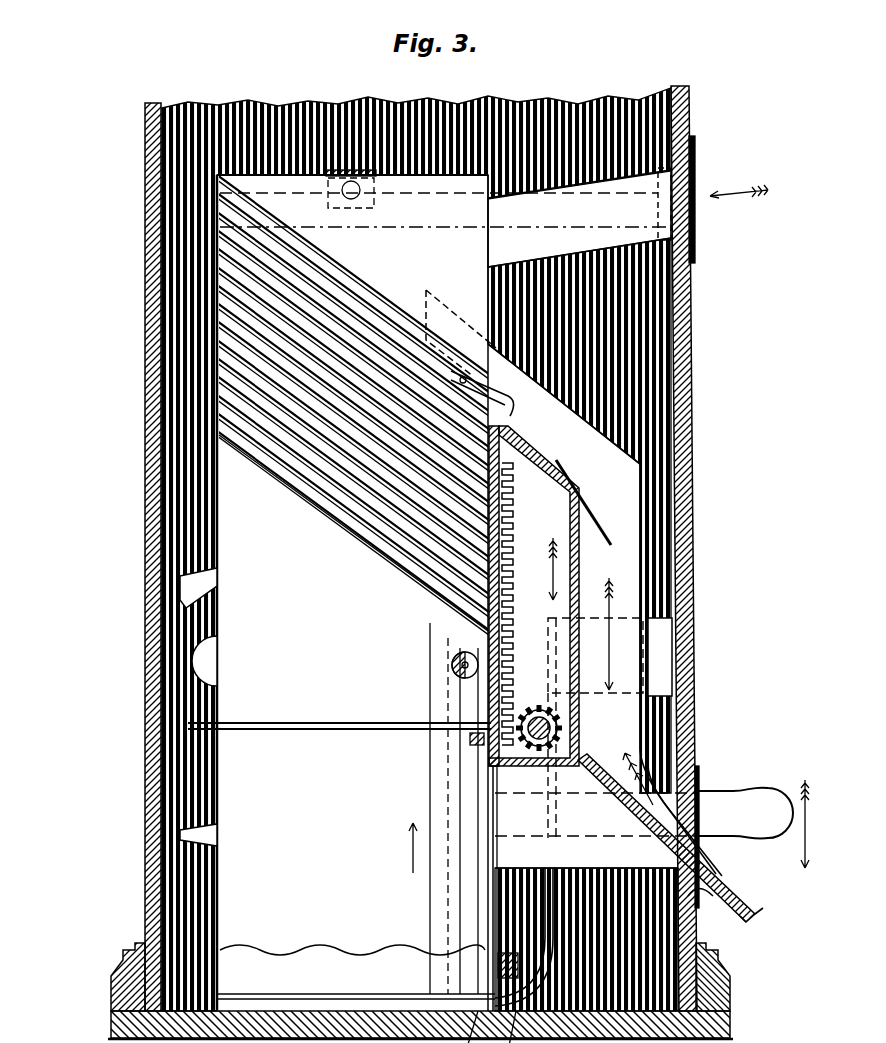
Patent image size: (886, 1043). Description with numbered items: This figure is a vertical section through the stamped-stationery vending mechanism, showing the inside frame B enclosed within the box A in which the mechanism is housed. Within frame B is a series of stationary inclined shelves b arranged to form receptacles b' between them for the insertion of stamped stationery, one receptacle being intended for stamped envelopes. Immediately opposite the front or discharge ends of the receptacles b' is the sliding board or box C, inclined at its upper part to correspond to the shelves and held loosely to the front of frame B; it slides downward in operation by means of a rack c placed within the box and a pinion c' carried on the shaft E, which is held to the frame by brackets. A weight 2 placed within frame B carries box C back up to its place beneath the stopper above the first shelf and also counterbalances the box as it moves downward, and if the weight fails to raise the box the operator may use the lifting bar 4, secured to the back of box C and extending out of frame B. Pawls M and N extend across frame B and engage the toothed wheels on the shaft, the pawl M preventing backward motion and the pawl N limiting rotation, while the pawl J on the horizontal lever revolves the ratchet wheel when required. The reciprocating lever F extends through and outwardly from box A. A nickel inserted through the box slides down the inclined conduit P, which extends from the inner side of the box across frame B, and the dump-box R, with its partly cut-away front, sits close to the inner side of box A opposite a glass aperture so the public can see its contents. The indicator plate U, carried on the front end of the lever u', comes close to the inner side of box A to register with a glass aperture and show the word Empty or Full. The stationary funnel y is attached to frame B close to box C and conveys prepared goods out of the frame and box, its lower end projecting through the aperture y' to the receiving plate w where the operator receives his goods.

The box A is at (137, 440).
The indicator plate U is at (660, 160).
The inclined conduit P is at (579, 218).
The lever u' is at (639, 204).
The inside frame B is at (444, 590).
The stationary inclined shelves b is at (353, 402).
The receptacles b' is at (353, 407).
The slat l is at (262, 418).
The stationary box or funnel y is at (621, 642).
The sliding board or box C is at (571, 552).
The rack c is at (514, 604).
The pinion c' is at (579, 728).
The lifting bar 4 is at (278, 714).
The weight 2 is at (432, 912).
The pawl M is at (196, 583).
The additional pawl N is at (198, 657).
The pawl J is at (198, 828).
The dump-box R is at (656, 650).
The shaft E is at (526, 760).
The reciprocating lever F is at (753, 824).
The aperture y' is at (684, 815).
The receiving plate w is at (744, 912).